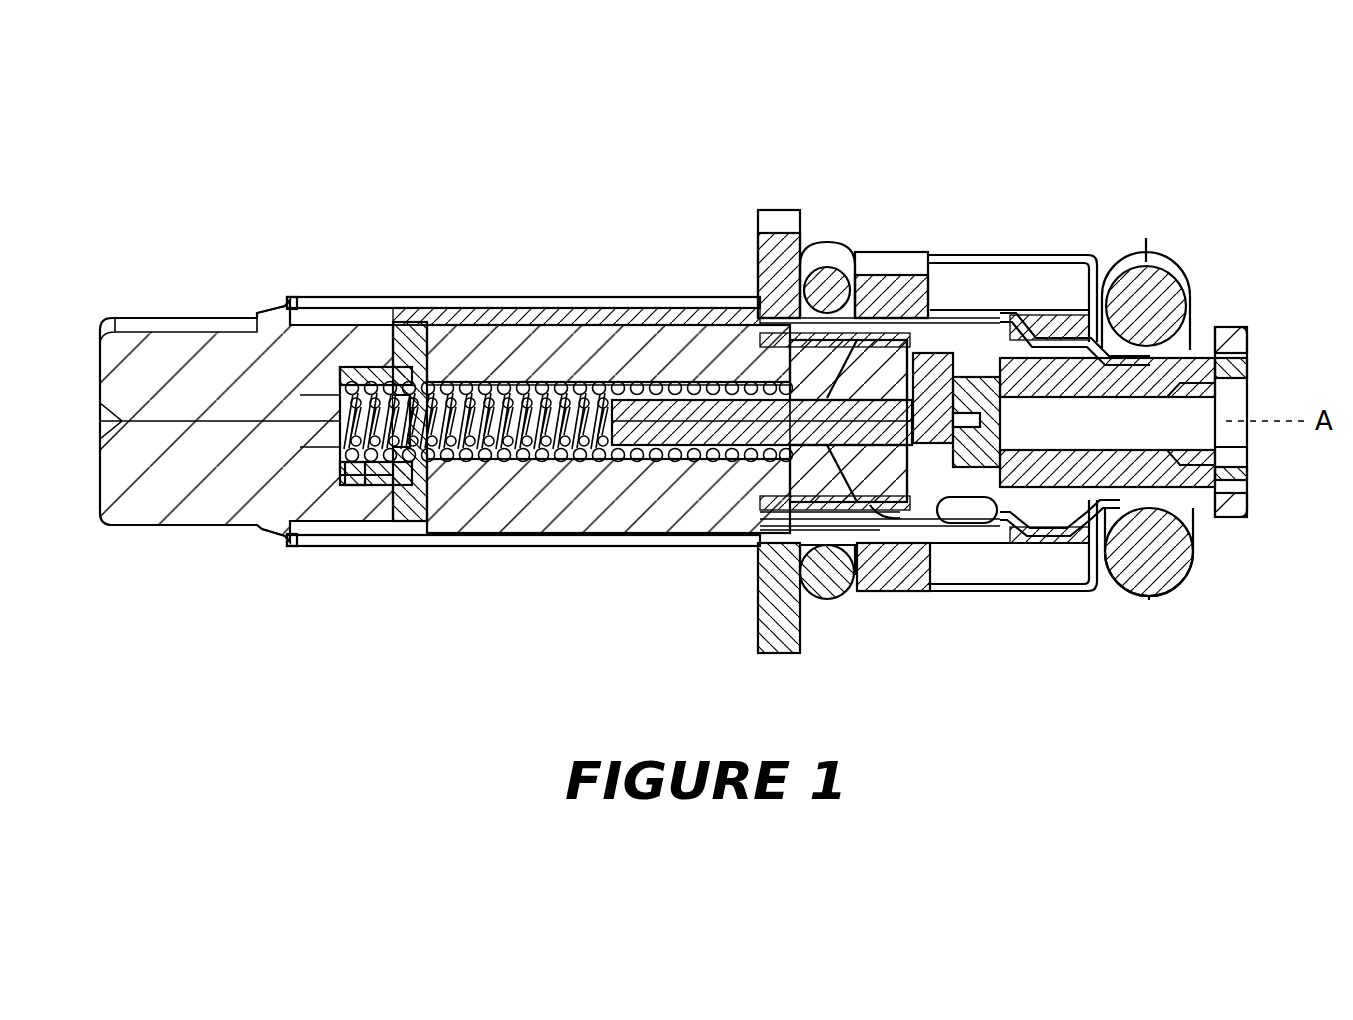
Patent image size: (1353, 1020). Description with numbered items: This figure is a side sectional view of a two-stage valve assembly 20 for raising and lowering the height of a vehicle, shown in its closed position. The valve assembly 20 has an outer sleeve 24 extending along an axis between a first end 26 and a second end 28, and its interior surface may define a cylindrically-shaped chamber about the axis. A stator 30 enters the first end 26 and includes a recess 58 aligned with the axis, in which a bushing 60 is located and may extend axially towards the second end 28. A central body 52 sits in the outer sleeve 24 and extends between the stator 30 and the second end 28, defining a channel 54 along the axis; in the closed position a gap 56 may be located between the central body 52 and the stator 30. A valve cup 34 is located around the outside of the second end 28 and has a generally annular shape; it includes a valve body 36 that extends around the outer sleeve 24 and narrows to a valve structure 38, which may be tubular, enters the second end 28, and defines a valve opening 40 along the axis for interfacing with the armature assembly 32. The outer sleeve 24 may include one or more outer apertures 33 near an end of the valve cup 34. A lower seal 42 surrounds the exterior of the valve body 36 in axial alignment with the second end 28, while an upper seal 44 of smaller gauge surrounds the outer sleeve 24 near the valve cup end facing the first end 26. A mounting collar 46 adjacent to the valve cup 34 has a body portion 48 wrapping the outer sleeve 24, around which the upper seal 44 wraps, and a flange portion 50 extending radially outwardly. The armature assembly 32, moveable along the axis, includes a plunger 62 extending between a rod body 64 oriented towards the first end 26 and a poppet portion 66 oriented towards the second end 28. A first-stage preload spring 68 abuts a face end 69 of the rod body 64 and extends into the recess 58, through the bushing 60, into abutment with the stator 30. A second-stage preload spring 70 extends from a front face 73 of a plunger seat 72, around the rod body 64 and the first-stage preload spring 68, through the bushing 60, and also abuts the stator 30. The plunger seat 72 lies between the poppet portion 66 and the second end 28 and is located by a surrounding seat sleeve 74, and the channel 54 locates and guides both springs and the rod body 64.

The valve assembly 20 is at (1283, 136).
The outer sleeve 24 is at (560, 297).
The first end 26 is at (290, 297).
The second end 28 is at (1170, 330).
The stator 30 is at (148, 318).
The armature assembly 32 is at (640, 368).
The outer apertures 33 is at (972, 524).
The valve cup 34 is at (988, 258).
The valve body 36 is at (955, 262).
The valve structure 38 is at (1130, 450).
The valve opening 40 is at (1095, 435).
The lower seal 42 is at (1160, 268).
The upper seal 44 is at (830, 270).
The mounting collar 46 is at (762, 210).
The body portion 48 is at (830, 545).
The flange portion 50 is at (775, 612).
The central body 52 is at (612, 362).
The channel 54 is at (638, 388).
The gap 56 is at (415, 345).
The recess 58 is at (338, 380).
The bushing 60 is at (355, 475).
The plunger 62 is at (780, 388).
The rod body 64 is at (650, 445).
The poppet portion 66 is at (893, 345).
The first-stage preload spring 68 is at (335, 437).
The face end 69 is at (600, 415).
The second-stage preload spring 70 is at (345, 455).
The plunger seat 72 is at (945, 362).
The front face 73 is at (755, 512).
The seat sleeve 74 is at (884, 527).